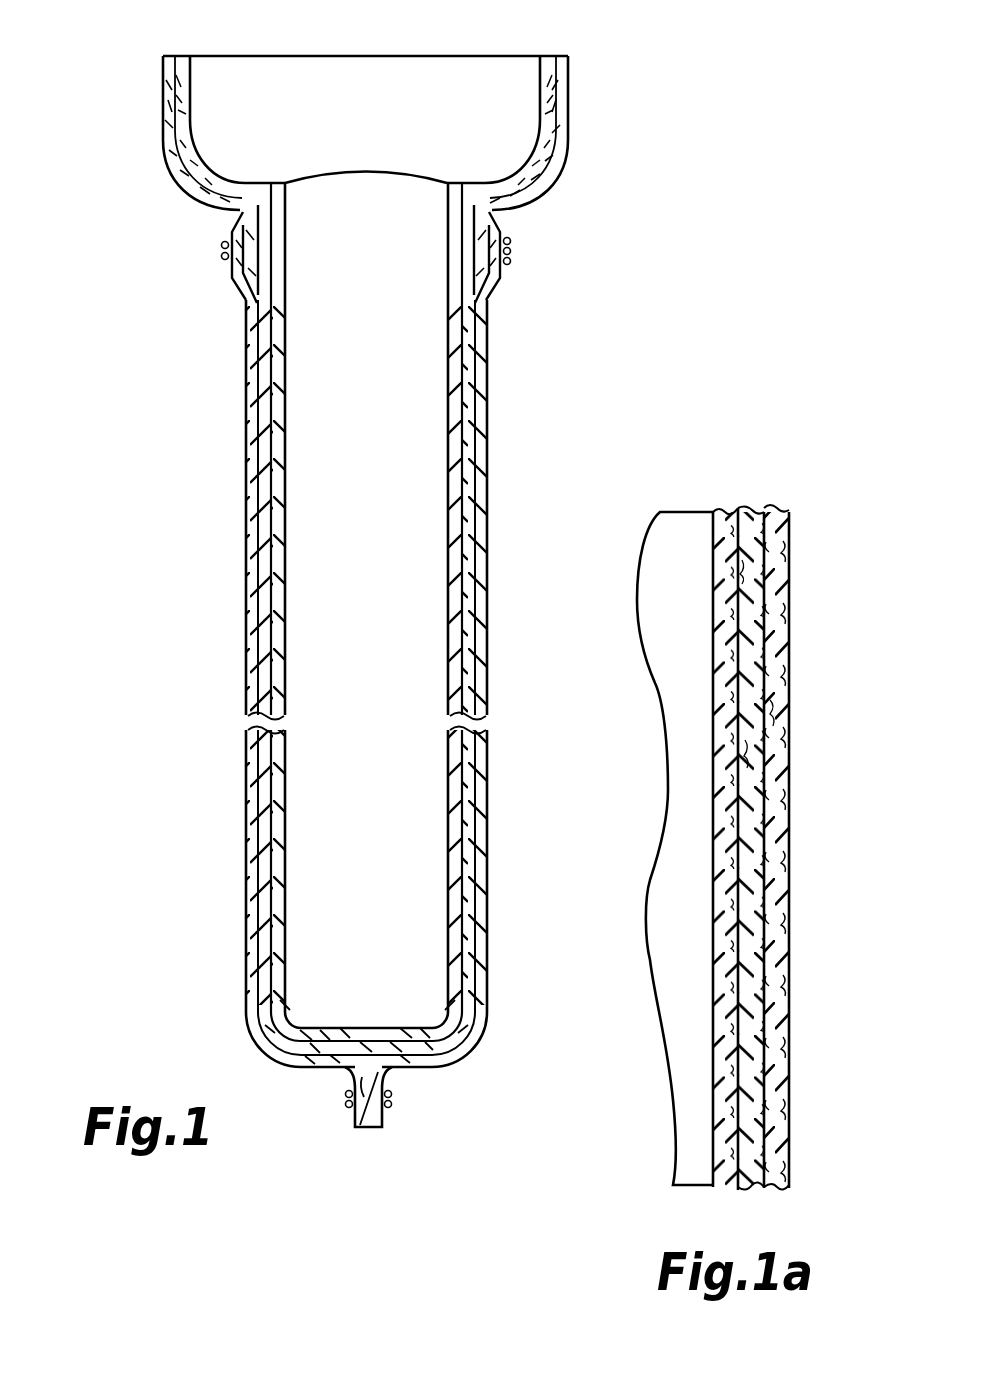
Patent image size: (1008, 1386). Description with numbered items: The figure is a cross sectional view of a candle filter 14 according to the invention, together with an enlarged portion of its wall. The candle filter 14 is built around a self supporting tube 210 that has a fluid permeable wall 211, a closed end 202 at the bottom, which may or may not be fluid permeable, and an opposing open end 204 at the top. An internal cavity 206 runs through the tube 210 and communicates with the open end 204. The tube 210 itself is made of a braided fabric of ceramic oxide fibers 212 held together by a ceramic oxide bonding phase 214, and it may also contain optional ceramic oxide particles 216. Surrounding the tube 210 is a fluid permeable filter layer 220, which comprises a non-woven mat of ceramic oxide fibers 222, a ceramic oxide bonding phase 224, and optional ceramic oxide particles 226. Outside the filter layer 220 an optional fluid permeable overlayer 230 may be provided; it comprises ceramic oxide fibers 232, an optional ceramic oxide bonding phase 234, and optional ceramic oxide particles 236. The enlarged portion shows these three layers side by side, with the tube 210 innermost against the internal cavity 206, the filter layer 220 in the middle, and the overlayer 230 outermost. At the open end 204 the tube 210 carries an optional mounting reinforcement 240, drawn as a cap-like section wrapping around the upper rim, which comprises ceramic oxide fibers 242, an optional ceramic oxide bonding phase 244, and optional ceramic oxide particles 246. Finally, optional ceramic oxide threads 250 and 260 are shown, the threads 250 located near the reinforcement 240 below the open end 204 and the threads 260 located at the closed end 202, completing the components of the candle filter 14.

In FIG. 1, the candle filter 14 is at (545, 361).
In FIG. 1, the closed end 202 is at (340, 1026).
In FIG. 1, the open end 204 is at (474, 55).
In FIG. 1, the internal cavity 206 is at (396, 535).
In FIG. 1a, the internal cavity 206 is at (665, 675).
In FIG. 1, the self supporting tube 210 is at (290, 392).
In FIG. 1a, the self supporting tube 210 is at (712, 890).
In FIG. 1, the fluid permeable wall 211 is at (283, 321).
In FIG. 1a, the braided fabric of ceramic oxide fibers 212 is at (722, 972).
In FIG. 1a, the ceramic oxide bonding phase 214 is at (722, 1120).
In FIG. 1a, the ceramic oxide particles 216 is at (722, 1005).
In FIG. 1, the fluid permeable filter layer 220 is at (250, 350).
In FIG. 1a, the fluid permeable filter layer 220 is at (757, 508).
In FIG. 1a, the non-woven mat of ceramic oxide fibers 222 is at (760, 808).
In FIG. 1a, the ceramic oxide bonding phase 224 is at (757, 537).
In FIG. 1a, the ceramic oxide particles 226 is at (778, 752).
In FIG. 1, the fluid permeable overlayer 230 is at (246, 578).
In FIG. 1a, the fluid permeable overlayer 230 is at (792, 603).
In FIG. 1a, the ceramic oxide fibers 232 is at (782, 955).
In FIG. 1a, the ceramic oxide bonding phase 234 is at (776, 1017).
In FIG. 1a, the ceramic oxide particles 236 is at (775, 722).
In FIG. 1, the mounting reinforcement 240 is at (180, 185).
In FIG. 1, the ceramic oxide fibers 242 is at (172, 110).
In FIG. 1, the ceramic oxide bonding phase 244 is at (165, 70).
In FIG. 1, the ceramic oxide particles 246 is at (178, 160).
In FIG. 1, the ceramic oxide threads 250 is at (514, 254).
In FIG. 1, the ceramic oxide threads 260 is at (393, 1092).